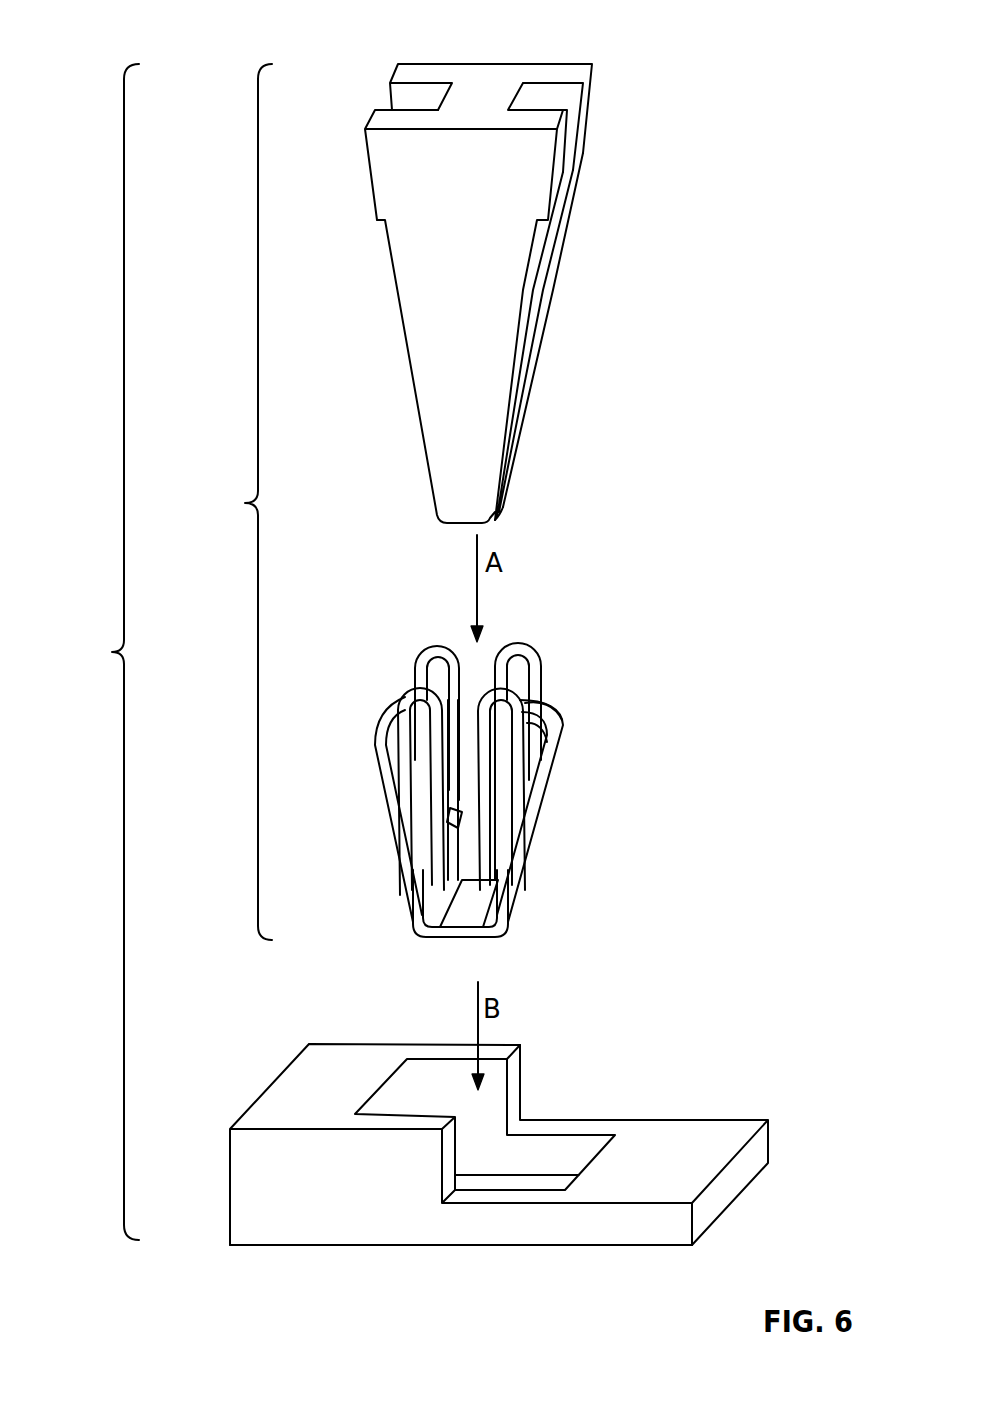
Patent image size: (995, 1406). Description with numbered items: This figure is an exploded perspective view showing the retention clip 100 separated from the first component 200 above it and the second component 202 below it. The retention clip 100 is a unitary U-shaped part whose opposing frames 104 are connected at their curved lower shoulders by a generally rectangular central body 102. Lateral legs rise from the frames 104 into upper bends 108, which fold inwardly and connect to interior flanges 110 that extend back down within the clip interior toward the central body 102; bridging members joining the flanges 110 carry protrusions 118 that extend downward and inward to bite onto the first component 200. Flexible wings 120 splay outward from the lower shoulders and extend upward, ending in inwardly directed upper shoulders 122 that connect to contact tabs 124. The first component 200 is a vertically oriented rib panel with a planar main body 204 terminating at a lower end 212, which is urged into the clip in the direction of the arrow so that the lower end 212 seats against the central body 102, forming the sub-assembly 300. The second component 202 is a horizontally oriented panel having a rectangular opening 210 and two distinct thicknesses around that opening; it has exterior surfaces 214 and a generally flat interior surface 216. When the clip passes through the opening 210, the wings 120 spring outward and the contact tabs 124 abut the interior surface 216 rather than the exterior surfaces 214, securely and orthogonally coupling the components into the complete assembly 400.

The retention clip 100 is at (462, 790).
The central body 102 is at (448, 933).
The frames 104 is at (413, 835).
The upper bends 108 is at (437, 647).
The interior flanges 110 is at (487, 793).
The protrusions 118 is at (457, 817).
The flexible wings 120 is at (382, 748).
The upper shoulders 122 is at (563, 723).
The contact tabs 124 is at (547, 703).
The first component 200 is at (529, 267).
The second component 202 is at (518, 1162).
The planar main body 204 is at (517, 93).
The opening 210 is at (553, 1133).
The lower end 212 is at (507, 490).
The exterior surfaces 214 is at (288, 1088).
The interior surface 216 is at (613, 1245).
The sub-assembly 300 is at (232, 502).
The assembly 400 is at (91, 652).